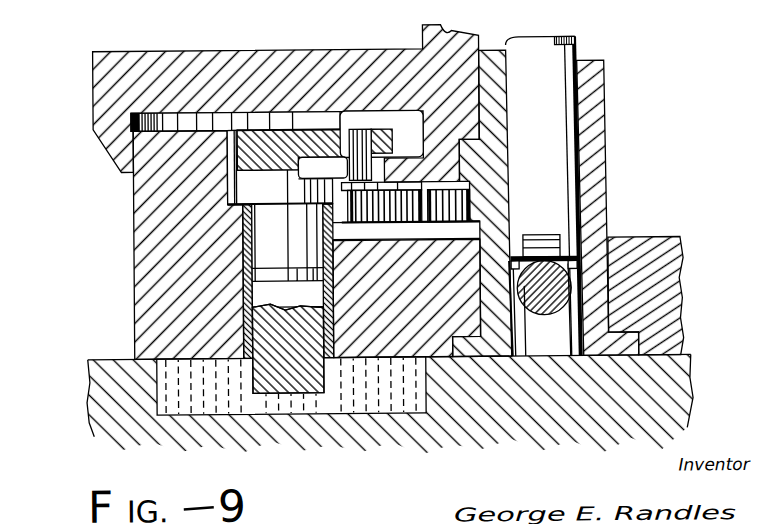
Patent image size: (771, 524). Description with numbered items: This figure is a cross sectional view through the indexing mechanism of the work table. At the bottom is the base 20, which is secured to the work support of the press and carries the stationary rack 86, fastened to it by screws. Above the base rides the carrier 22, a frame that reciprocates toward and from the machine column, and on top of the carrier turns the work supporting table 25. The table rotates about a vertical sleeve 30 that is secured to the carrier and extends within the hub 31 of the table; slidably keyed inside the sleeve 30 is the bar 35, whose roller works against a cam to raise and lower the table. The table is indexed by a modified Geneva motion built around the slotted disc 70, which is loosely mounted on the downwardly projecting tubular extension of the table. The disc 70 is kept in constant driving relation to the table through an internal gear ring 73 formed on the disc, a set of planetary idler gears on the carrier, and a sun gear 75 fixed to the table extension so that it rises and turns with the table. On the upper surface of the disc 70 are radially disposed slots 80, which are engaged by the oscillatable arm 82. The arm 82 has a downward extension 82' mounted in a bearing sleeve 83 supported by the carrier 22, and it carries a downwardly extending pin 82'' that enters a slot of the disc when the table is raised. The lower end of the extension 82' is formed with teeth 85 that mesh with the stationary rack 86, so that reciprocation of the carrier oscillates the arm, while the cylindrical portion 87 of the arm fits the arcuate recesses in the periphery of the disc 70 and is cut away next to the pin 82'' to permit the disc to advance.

The base 20 is at (672, 386).
The carrier 22 is at (150, 295).
The work supporting table 25 is at (386, 67).
The sleeve 30 is at (591, 109).
The hub 31 is at (472, 168).
The bar 35 is at (548, 64).
The slotted disc 70 is at (407, 162).
The internal gear ring 73 is at (363, 222).
The sun gear 75 is at (470, 204).
The radially disposed slots 80 is at (322, 168).
The oscillatable arm 82 is at (261, 122).
The downward extension 82' is at (288, 256).
The downwardly extending pin 82'' is at (375, 142).
The bearing sleeve 83 is at (243, 256).
The teeth 85 is at (257, 379).
The stationary rack 86 is at (362, 402).
The cylindrical portion 87 is at (287, 167).